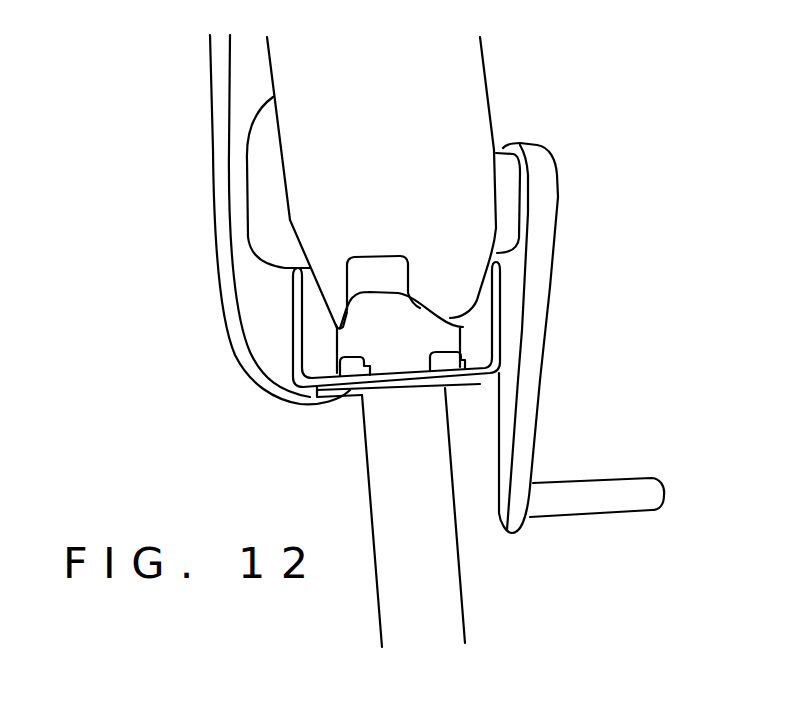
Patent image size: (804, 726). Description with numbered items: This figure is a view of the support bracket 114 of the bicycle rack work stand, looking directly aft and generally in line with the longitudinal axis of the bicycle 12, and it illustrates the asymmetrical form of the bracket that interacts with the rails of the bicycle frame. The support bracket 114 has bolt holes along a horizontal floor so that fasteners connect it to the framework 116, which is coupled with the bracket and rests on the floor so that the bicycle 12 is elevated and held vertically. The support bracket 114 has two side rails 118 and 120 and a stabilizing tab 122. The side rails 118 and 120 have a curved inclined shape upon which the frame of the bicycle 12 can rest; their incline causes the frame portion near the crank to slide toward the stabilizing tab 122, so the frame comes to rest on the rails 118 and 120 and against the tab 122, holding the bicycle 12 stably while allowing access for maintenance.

The bicycle 12 is at (592, 198).
The support bracket 114 is at (358, 388).
The framework 116 is at (458, 562).
The side rail 118 is at (313, 332).
The side rail 120 is at (505, 315).
The stabilizing tab 122 is at (412, 332).